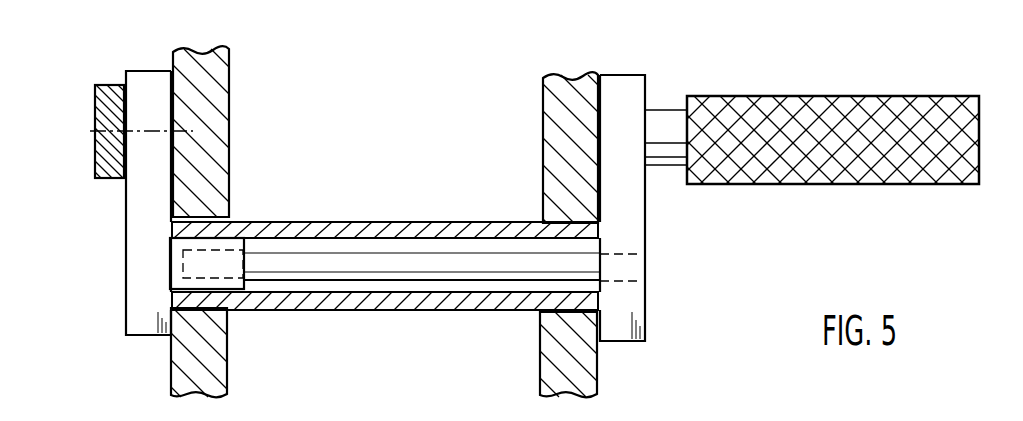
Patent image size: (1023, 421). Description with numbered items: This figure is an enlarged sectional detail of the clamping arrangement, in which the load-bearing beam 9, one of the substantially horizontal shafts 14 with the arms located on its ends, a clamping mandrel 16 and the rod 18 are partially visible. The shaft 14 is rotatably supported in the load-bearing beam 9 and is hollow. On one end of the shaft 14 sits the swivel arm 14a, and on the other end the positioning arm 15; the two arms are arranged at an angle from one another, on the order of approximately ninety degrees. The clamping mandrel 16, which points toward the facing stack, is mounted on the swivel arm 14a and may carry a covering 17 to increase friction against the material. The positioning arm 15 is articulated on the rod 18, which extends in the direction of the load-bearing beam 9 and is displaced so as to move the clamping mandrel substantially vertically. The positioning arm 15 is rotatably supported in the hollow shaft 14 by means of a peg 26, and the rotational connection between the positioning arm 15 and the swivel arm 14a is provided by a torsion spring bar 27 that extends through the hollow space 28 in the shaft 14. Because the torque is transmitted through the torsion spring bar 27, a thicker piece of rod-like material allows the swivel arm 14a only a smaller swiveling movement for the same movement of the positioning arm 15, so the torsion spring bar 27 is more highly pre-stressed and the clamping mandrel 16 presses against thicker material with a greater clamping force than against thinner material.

The load-bearing beam 9 is at (203, 75).
The shaft 14 is at (348, 232).
The swivel arm 14a is at (622, 317).
The positioning arm 15 is at (148, 83).
The clamping mandrel 16 is at (663, 127).
The covering 17 is at (827, 120).
The rod 18 is at (110, 101).
The peg 26 is at (233, 243).
The torsion spring bar 27 is at (438, 260).
The hollow space 28 is at (403, 287).